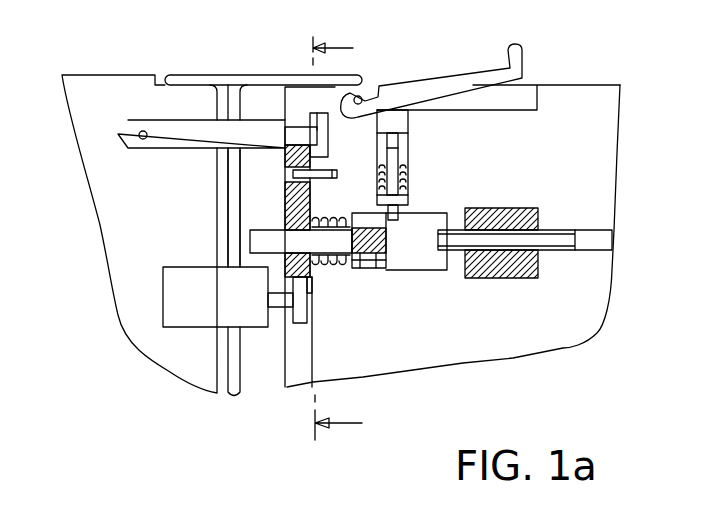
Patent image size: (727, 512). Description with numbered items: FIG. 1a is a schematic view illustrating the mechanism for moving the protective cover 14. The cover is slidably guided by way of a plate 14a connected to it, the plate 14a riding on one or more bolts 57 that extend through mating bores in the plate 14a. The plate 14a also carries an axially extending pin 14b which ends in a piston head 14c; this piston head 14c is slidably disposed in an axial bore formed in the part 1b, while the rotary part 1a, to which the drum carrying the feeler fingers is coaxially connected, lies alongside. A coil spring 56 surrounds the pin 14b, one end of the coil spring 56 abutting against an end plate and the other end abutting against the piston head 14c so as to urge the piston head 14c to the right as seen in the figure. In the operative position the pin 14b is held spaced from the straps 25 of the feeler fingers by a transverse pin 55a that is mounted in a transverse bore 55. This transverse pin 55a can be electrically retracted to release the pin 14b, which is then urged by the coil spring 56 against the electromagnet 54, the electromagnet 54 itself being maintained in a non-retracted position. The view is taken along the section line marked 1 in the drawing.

The section line 1 is at (347, 237).
The rotary part 1a is at (575, 113).
The part 1b is at (93, 75).
The protective cover 14 is at (226, 75).
The plate 14a is at (231, 202).
The pin 14b is at (292, 240).
The piston head 14c is at (380, 263).
The strap 25 is at (407, 90).
The electromagnet 54 is at (522, 213).
The transverse bore 55 is at (408, 183).
The transverse pin 55a is at (395, 220).
The coil spring 56 is at (342, 266).
The bolt 57 is at (188, 136).